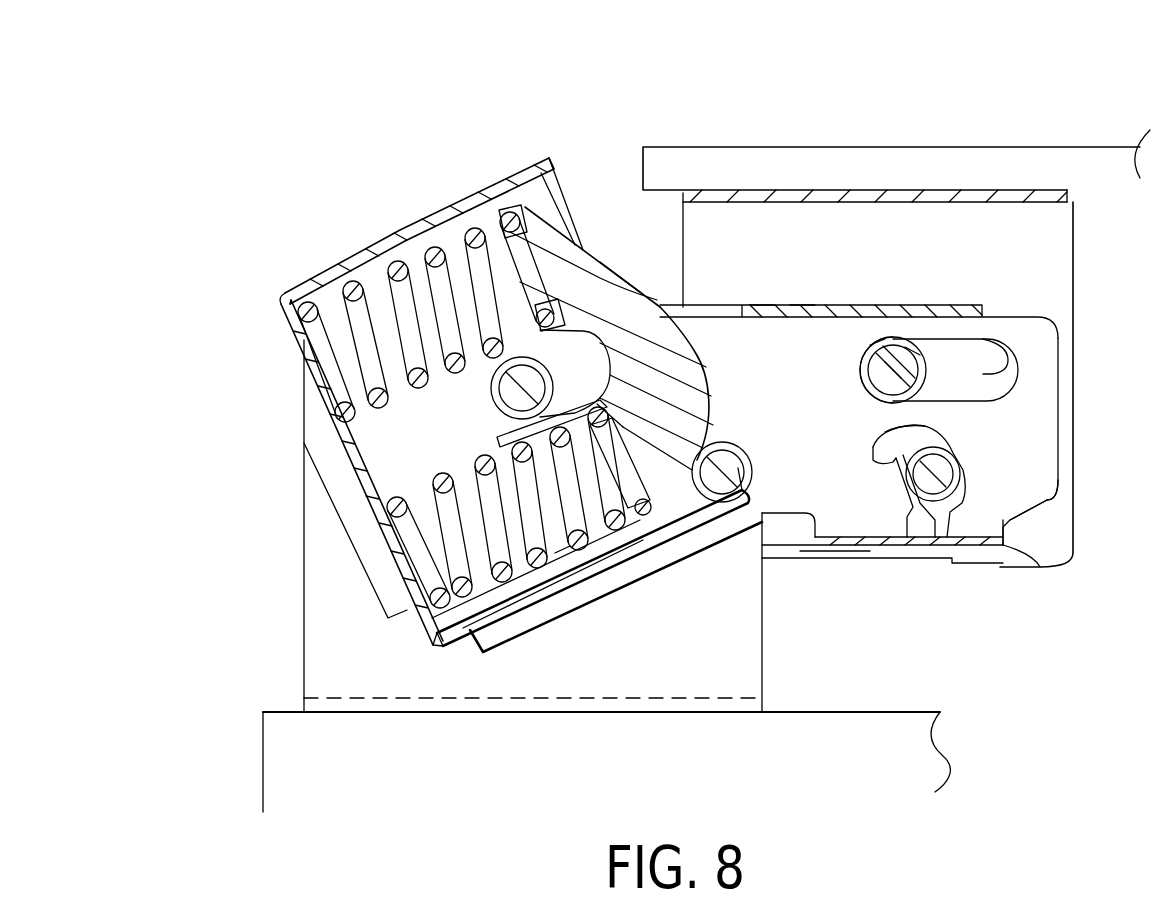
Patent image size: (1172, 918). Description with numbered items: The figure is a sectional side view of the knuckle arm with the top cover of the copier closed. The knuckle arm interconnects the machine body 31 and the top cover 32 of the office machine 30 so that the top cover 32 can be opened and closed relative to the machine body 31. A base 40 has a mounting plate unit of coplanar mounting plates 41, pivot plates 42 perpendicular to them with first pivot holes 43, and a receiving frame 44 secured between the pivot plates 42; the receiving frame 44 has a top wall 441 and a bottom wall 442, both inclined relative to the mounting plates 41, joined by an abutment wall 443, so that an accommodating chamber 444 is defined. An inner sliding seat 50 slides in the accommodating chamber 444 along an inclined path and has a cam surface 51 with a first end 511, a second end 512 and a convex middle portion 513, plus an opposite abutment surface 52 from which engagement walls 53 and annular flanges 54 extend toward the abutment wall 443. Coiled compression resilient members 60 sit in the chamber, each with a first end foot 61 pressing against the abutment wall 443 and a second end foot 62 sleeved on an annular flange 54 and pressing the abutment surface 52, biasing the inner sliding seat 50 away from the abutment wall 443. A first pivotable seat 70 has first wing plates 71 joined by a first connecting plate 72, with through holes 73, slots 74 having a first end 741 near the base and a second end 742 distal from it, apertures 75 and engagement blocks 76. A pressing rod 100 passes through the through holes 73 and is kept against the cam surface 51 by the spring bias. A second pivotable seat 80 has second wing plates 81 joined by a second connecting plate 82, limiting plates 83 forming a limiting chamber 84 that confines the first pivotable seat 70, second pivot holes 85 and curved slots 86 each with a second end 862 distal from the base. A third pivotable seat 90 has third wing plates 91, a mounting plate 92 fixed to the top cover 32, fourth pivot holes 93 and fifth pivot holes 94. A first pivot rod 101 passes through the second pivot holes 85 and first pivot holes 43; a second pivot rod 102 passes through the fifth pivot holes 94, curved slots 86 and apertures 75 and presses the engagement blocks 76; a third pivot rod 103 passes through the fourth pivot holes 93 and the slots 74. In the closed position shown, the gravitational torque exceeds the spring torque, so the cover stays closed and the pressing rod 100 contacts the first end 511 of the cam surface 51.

The office machine 30 is at (945, 765).
The machine body 31 is at (282, 744).
The top cover 32 is at (1112, 160).
The base 40 is at (305, 650).
The mounting plates 41 is at (320, 689).
The pivot plates 42 is at (325, 565).
The first pivot holes 43 is at (440, 648).
The receiving frame 44 is at (345, 262).
The top wall 441 is at (315, 280).
The bottom wall 442 is at (483, 617).
The abutment wall 443 is at (337, 430).
The accommodating chamber 444 is at (291, 283).
The inner sliding seat 50 is at (582, 240).
The cam surface 51 is at (613, 270).
The first end 511 is at (695, 490).
The second end 512 is at (540, 193).
The convex middle portion 513 is at (677, 350).
The abutment surface 52 is at (500, 193).
The engagement walls 53 is at (430, 232).
The annular flanges 54 is at (453, 197).
The resilient members 60 is at (393, 263).
The first end foot 61 is at (300, 315).
The second end foot 62 is at (480, 193).
The first pivotable seat 70 is at (1005, 567).
The first wing plates 71 is at (1020, 505).
The first connecting plate 72 is at (980, 542).
The through holes 73 is at (813, 540).
The slots 74 is at (972, 338).
The first end 741 is at (880, 343).
The second end 742 is at (1000, 376).
The apertures 75 is at (1012, 515).
The engagement blocks 76 is at (910, 512).
The second pivotable seat 80 is at (842, 303).
The second wing plates 81 is at (950, 352).
The second connecting plate 82 is at (803, 303).
The limiting plates 83 is at (833, 550).
The limiting chamber 84 is at (763, 303).
The second pivot holes 85 is at (525, 410).
The curved slots 86 is at (923, 505).
The second end 862 is at (933, 428).
The third pivotable seat 90 is at (1066, 168).
The third wing plates 91 is at (1060, 238).
The mounting plate 92 is at (1070, 188).
The fourth pivot holes 93 is at (913, 348).
The fifth pivot holes 94 is at (950, 478).
The pressing rod 100 is at (752, 478).
The first pivot rod 101 is at (568, 470).
The second pivot rod 102 is at (1030, 500).
The third pivot rod 103 is at (895, 362).